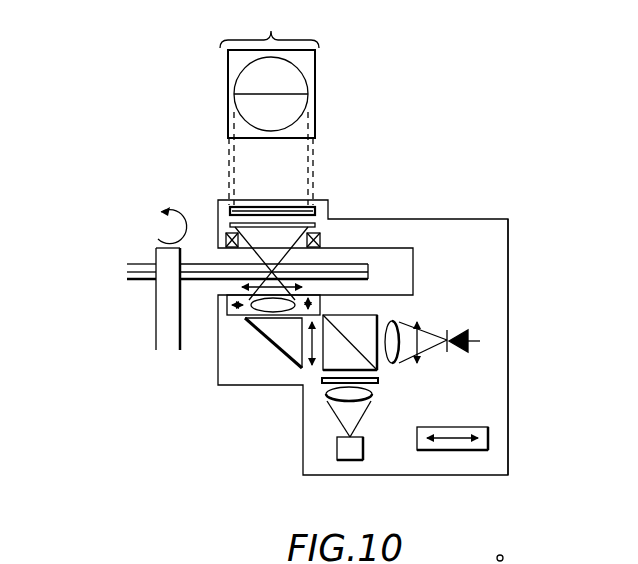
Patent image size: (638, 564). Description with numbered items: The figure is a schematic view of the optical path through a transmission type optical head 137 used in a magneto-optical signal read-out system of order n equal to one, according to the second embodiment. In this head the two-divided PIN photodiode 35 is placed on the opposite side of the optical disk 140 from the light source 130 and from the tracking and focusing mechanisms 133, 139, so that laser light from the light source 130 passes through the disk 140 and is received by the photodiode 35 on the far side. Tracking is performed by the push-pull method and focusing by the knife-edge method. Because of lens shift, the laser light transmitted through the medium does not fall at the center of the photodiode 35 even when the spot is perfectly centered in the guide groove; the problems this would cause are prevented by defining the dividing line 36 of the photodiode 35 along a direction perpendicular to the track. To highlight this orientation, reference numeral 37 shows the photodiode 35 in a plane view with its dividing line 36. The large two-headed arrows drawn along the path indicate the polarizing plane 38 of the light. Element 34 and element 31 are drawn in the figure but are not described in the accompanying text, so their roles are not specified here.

The plane view of photodiode 37 is at (269, 26).
The dividing line 36 is at (316, 82).
The 2-divided PIN photodiode 35 is at (310, 209).
The filter plate 34 is at (318, 226).
The optical disk 140 is at (360, 262).
The focusing mechanism 139 is at (322, 298).
The polarizing plane 38 is at (416, 321).
The light source 130 is at (470, 332).
The collimating lens 31 is at (396, 352).
The transmission type optical head 137 is at (510, 376).
The tracking mechanism 133 is at (380, 425).